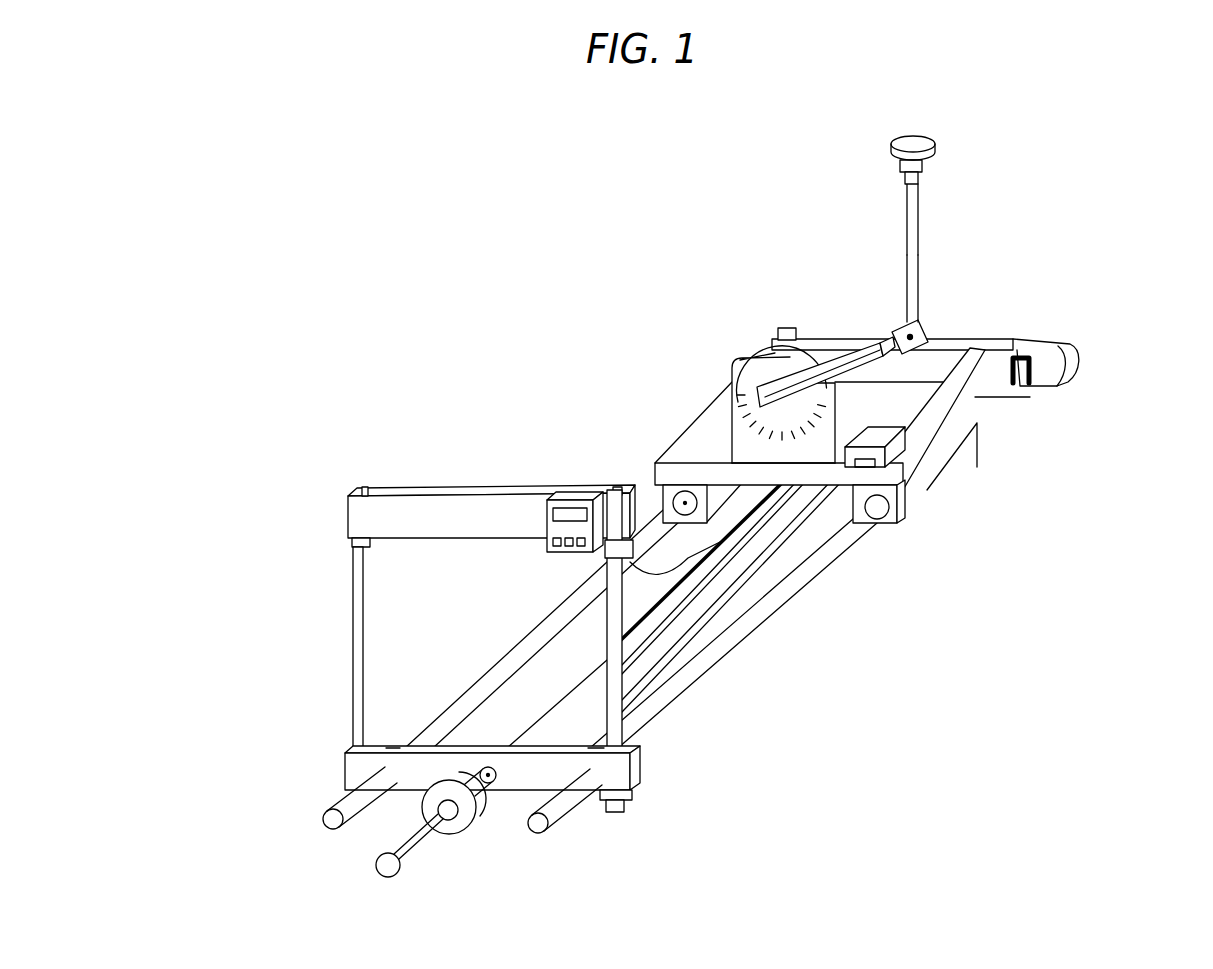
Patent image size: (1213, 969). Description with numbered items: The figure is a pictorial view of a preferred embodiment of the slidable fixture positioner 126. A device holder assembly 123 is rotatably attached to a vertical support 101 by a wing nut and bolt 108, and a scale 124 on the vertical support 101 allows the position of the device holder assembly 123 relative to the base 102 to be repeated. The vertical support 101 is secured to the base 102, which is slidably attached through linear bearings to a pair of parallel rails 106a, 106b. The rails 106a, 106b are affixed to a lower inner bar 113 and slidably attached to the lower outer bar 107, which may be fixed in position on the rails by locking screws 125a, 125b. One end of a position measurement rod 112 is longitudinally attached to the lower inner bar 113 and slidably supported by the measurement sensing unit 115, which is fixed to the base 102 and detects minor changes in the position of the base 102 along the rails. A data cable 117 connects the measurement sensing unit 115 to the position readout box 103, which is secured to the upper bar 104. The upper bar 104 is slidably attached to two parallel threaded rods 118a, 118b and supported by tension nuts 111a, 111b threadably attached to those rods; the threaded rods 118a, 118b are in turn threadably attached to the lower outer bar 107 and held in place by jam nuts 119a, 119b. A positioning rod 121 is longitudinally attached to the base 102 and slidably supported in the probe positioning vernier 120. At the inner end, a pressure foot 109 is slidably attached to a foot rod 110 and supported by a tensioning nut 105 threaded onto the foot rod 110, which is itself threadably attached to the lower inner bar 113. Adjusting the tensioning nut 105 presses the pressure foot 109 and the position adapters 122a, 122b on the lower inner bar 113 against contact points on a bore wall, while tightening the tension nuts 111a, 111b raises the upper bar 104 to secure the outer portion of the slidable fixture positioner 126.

The vertical support 101 is at (700, 400).
The base 102 is at (705, 452).
The position readout box 103 is at (514, 491).
The upper bar 104 is at (421, 487).
The tensioning nut 105 is at (974, 207).
The parallel rail 106a is at (556, 615).
The parallel rail 106b is at (733, 653).
The lower outer bar 107 is at (427, 758).
The wing nut and bolt 108 is at (726, 366).
The pressure foot 109 is at (973, 171).
The foot rod 110 is at (850, 267).
The tension nut 111a is at (294, 570).
The tension nut 111b is at (740, 589).
The position measurement rod 112 is at (863, 530).
The lower inner bar 113 is at (919, 317).
The measurement sensing unit 115 is at (935, 484).
The data cable 117 is at (720, 614).
The parallel threaded rod 118a is at (289, 647).
The parallel threaded rod 118b is at (708, 619).
The jam nut 119a is at (298, 821).
The jam nut 119b is at (646, 812).
The probe positioning vernier 120 is at (512, 832).
The positioning rod 121 is at (464, 879).
The position adapter 122a is at (719, 285).
The position adapter 122b is at (1083, 402).
The device holder assembly 123 is at (780, 333).
The scale 124 is at (724, 359).
The locking screw 125a is at (300, 787).
The locking screw 125b is at (495, 668).
The slidable fixture positioner 126 is at (1079, 344).